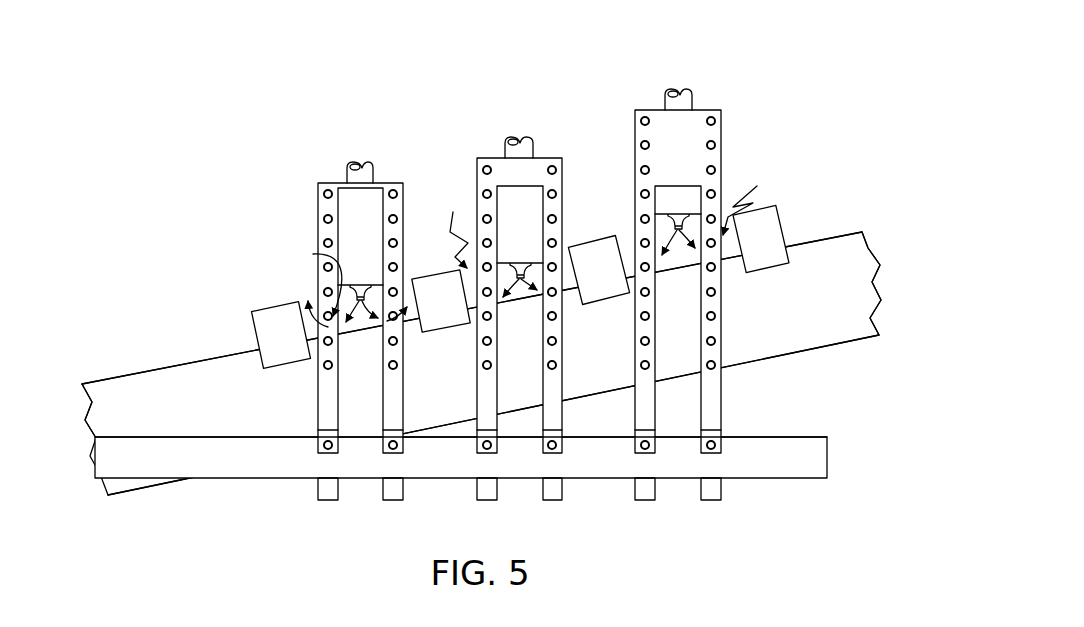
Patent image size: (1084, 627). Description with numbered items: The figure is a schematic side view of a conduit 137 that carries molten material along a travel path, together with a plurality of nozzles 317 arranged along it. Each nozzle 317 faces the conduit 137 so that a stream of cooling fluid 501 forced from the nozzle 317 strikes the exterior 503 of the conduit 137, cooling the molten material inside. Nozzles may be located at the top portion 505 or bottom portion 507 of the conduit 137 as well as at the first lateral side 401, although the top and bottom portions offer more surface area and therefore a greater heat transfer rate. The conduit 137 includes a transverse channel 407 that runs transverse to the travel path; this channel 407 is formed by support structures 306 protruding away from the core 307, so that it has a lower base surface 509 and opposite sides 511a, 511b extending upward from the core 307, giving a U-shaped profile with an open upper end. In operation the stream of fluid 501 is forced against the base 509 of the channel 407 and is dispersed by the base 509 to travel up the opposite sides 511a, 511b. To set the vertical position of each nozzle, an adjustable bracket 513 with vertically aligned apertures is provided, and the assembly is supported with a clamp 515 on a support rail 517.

The conduit 137 is at (841, 361).
The support structures 306 is at (590, 247).
The core 307 is at (161, 369).
The nozzle 317 is at (388, 183).
The first lateral side 401 is at (812, 307).
The transverse channel 407 is at (532, 239).
The stream of cooling fluid 501 is at (683, 250).
The exterior of the conduit 503 is at (524, 292).
The top portion 505 is at (862, 229).
The bottom portion 507 is at (790, 357).
The lower base surface 509 is at (355, 331).
The first side of the channel 511a is at (306, 296).
The second side of the channel 511b is at (413, 335).
The adjustable bracket 513 is at (635, 358).
The clamp 515 is at (722, 446).
The support rail 517 is at (799, 465).